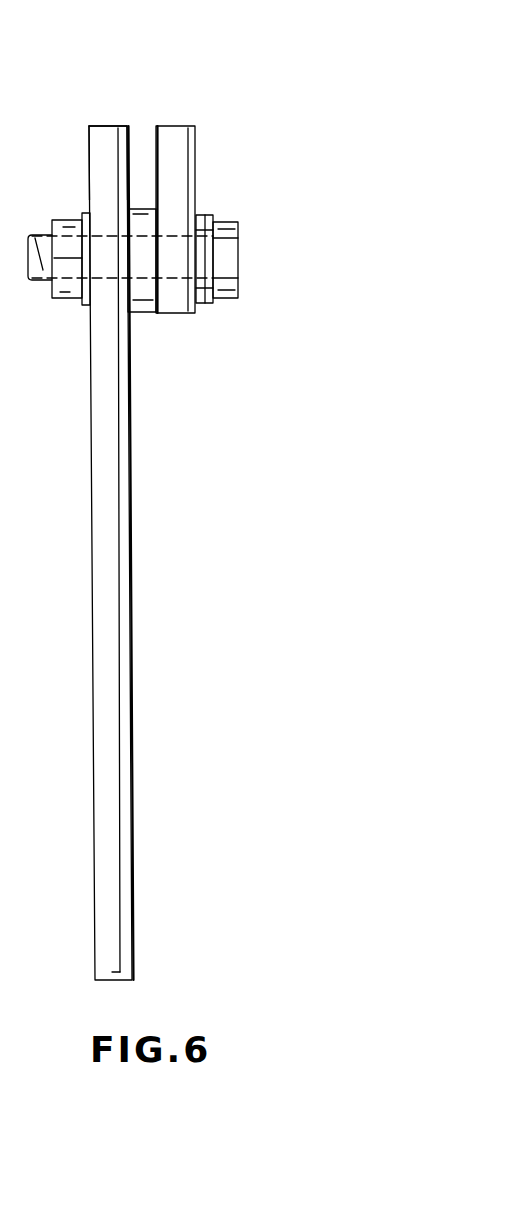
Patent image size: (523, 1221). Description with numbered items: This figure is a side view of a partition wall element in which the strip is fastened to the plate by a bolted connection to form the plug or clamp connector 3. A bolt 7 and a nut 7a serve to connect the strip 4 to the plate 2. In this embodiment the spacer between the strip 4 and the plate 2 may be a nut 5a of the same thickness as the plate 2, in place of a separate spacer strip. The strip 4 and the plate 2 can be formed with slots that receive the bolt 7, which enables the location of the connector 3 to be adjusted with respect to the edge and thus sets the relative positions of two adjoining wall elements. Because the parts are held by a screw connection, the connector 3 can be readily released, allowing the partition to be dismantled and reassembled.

The plate 2 is at (118, 690).
The plug or clamp connector 3 is at (100, 121).
The strip 4 is at (182, 128).
The nut 5a is at (143, 296).
The bolt 7 is at (228, 258).
The nut 7a is at (63, 300).